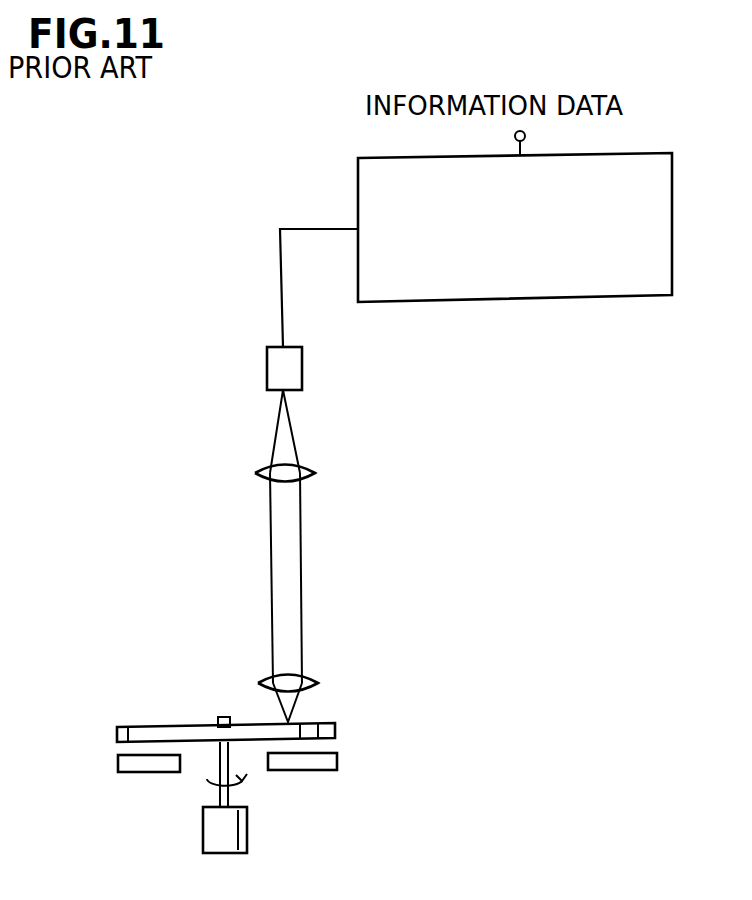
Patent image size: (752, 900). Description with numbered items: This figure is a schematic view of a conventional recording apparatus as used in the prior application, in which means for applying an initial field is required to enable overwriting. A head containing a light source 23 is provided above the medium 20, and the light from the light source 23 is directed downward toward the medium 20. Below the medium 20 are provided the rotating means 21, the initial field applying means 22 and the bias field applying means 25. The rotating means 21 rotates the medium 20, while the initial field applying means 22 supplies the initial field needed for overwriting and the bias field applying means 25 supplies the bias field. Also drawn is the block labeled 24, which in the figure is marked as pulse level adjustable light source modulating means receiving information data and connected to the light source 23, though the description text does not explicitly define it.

The medium 20 is at (336, 733).
The rotating means 21 is at (247, 830).
The initial field H_ini applying means 22 is at (338, 761).
The light source 23 is at (267, 368).
The pulse level adjustable light source modulating means 24 is at (357, 187).
The bias field Hb applying means 25 is at (153, 774).